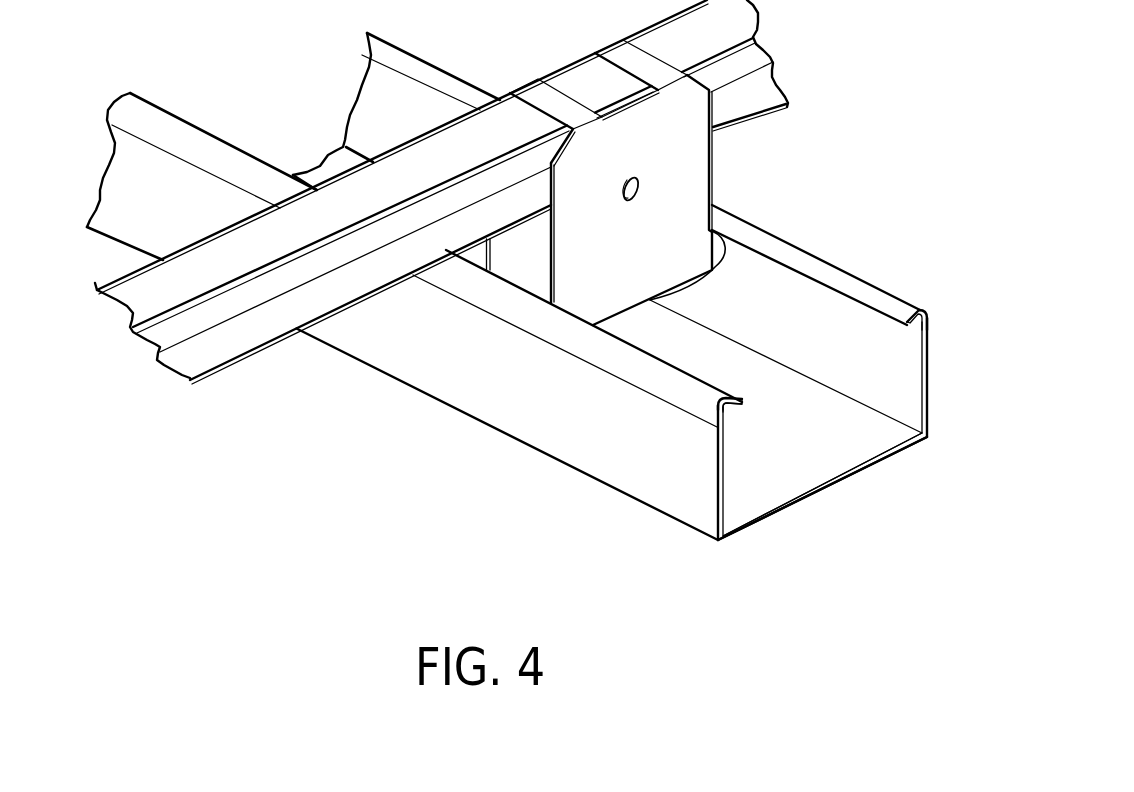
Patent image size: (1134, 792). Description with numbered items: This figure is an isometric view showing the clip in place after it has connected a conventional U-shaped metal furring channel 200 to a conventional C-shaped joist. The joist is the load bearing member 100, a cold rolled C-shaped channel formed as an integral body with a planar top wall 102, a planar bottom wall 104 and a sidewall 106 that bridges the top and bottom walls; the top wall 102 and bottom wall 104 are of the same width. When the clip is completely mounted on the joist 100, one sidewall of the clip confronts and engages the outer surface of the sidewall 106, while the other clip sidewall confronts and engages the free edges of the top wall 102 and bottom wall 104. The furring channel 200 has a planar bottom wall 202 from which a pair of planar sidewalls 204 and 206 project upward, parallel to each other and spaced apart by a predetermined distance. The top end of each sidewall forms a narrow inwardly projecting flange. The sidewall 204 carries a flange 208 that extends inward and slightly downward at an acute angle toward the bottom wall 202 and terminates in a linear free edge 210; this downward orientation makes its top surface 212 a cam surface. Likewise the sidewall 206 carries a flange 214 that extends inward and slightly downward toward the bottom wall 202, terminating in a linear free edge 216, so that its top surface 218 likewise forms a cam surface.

The load bearing member 100 is at (186, 331).
The top wall 102 is at (270, 237).
The bottom wall 104 is at (247, 333).
The sidewall 106 is at (212, 312).
The furring channel 200 is at (929, 369).
The bottom wall 202 is at (850, 480).
The sidewall 204 is at (630, 432).
The sidewall 206 is at (931, 316).
The flange 208 is at (675, 367).
The free edge 210 is at (742, 407).
The top surface 212 is at (727, 405).
The flange 214 is at (779, 246).
The free edge 216 is at (786, 332).
The top surface 218 is at (832, 273).